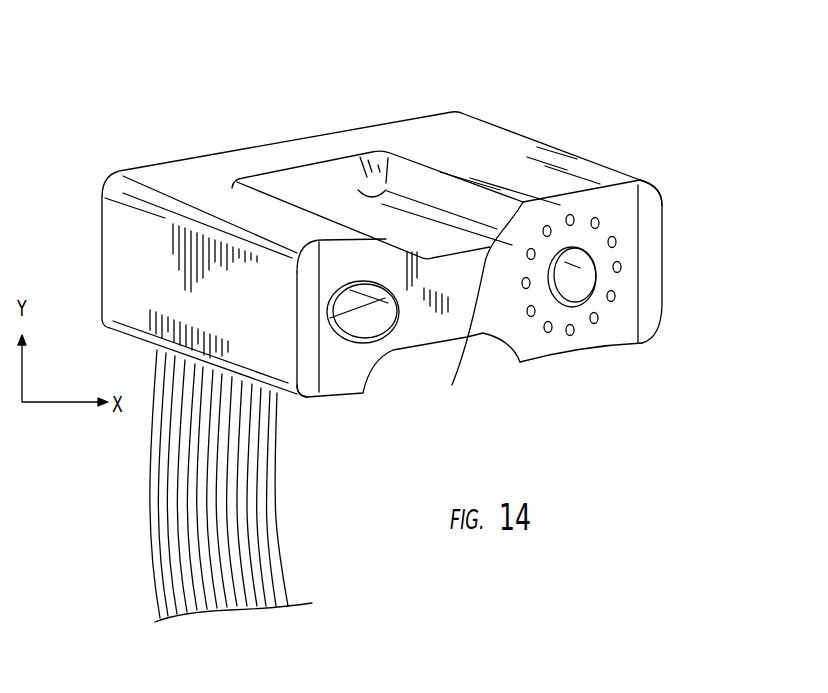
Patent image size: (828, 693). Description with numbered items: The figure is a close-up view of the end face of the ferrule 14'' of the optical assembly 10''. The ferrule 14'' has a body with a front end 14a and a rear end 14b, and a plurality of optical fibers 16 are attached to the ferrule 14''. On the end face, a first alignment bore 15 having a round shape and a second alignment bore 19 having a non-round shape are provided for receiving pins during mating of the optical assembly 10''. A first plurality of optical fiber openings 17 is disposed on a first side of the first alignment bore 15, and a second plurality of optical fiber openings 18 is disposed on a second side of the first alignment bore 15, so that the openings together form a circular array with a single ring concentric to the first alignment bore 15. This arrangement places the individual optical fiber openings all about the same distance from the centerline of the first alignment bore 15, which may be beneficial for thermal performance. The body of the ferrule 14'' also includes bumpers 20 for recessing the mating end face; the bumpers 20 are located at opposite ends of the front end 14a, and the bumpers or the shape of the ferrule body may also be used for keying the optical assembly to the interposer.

The optical assembly 10'' is at (419, 254).
The ferrule 14'' is at (382, 240).
The front end 14a is at (588, 342).
The rear end 14b is at (185, 157).
The first alignment bore 15 is at (663, 237).
The optical fibers 16 is at (263, 597).
The first plurality of optical fiber openings 17 is at (566, 221).
The second plurality of optical fiber openings 18 is at (599, 226).
The second alignment bore 19 is at (352, 328).
The bumpers 20 is at (655, 185).